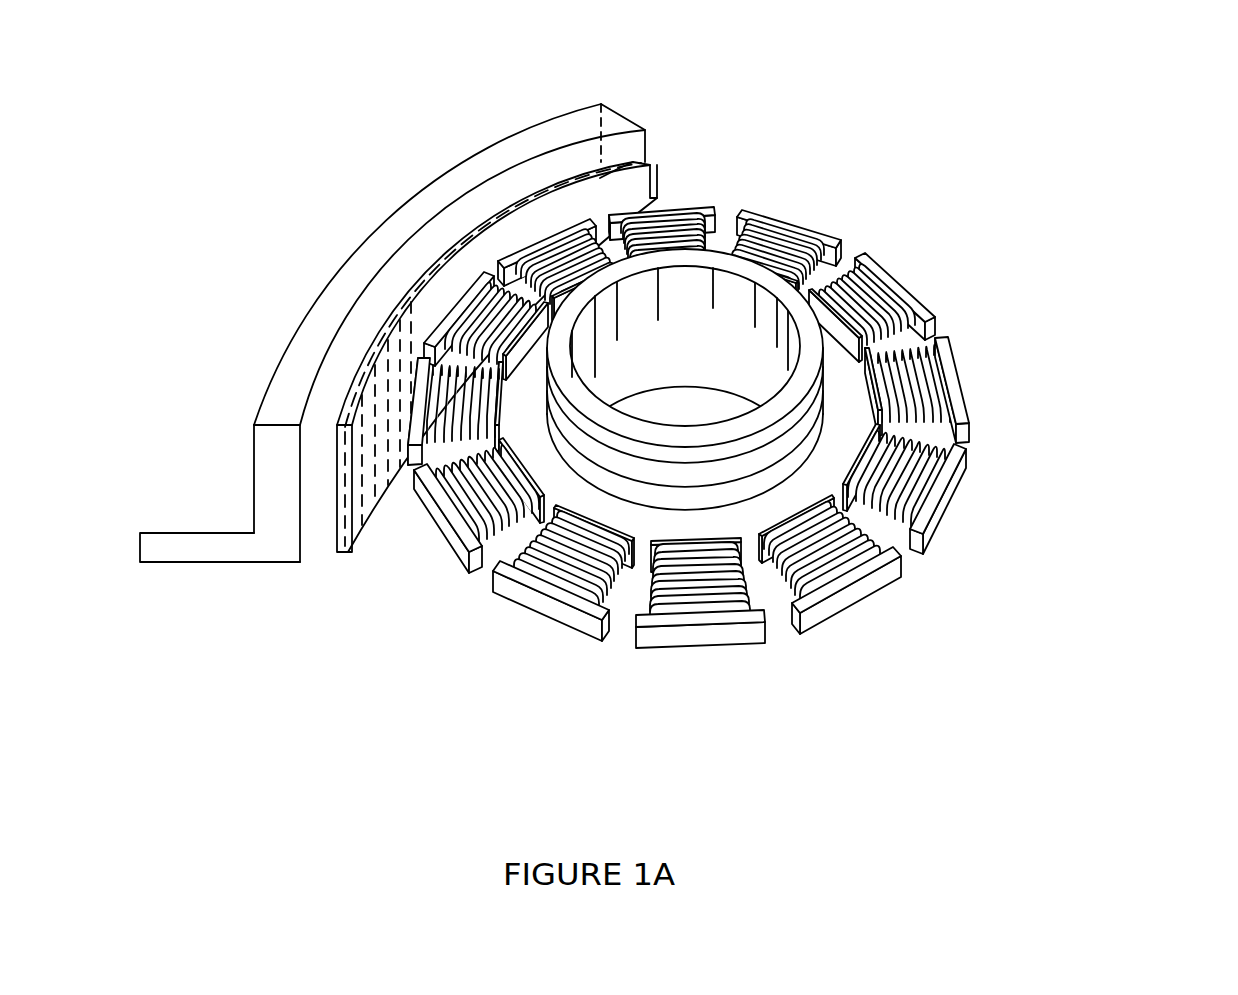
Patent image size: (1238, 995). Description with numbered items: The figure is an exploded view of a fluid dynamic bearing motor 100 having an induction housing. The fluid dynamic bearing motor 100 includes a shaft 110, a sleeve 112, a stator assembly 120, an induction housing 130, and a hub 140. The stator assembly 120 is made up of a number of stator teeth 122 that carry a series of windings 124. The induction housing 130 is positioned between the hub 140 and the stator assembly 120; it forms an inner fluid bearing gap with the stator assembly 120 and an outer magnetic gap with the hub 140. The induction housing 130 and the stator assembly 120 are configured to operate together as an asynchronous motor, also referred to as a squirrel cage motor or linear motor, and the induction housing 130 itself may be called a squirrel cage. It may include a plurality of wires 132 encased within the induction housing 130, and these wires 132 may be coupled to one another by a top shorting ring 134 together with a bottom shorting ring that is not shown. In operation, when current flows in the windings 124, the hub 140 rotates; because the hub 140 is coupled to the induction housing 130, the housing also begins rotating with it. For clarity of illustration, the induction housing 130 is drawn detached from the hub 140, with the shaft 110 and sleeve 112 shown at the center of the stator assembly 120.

The fluid dynamic bearing motor 100 is at (624, 402).
The shaft 110 is at (683, 308).
The sleeve 112 is at (692, 508).
The stator assembly 120 is at (745, 515).
The stator teeth 122 is at (955, 382).
The windings 124 is at (508, 527).
The induction housing 130 is at (477, 260).
The wires 132 is at (388, 358).
The top shorting ring 134 is at (627, 162).
The hub 140 is at (270, 513).